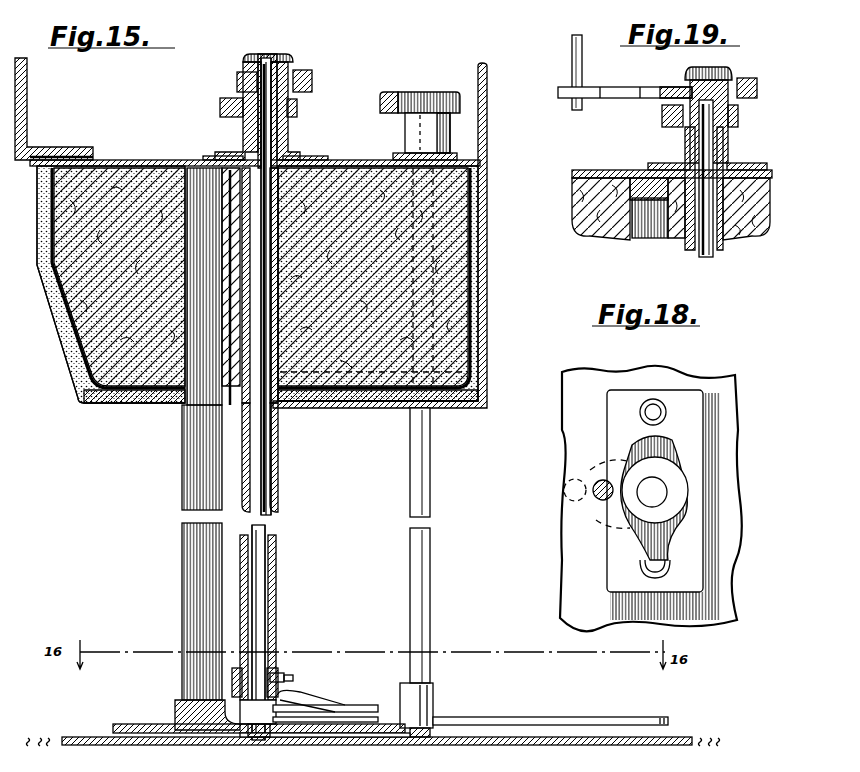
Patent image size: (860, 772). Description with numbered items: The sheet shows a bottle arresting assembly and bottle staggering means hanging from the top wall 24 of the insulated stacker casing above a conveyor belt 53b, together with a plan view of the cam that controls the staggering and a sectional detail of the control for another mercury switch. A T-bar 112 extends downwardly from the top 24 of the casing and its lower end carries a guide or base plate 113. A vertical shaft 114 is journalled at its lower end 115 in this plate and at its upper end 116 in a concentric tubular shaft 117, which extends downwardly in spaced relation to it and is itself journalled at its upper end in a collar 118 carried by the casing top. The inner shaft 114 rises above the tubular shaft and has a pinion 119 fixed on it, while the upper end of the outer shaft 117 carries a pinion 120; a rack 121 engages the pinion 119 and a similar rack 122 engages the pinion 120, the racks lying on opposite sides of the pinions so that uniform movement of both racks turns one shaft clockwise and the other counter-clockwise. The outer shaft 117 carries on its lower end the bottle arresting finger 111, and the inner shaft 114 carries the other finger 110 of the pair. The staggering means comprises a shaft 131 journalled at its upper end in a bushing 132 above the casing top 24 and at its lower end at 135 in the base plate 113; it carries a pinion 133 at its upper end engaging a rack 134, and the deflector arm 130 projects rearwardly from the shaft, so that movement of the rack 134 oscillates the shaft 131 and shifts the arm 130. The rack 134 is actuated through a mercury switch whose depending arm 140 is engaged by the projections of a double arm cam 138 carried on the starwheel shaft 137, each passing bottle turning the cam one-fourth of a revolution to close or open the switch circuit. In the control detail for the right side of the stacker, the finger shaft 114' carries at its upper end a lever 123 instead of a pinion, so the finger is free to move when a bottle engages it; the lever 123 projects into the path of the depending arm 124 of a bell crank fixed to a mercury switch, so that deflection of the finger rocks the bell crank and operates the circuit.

In FIG. 15, the top wall 24 is at (118, 188).
In FIG. 19, the top wall 24 is at (590, 170).
In FIG. 18, the top wall 24 is at (588, 382).
In FIG. 15, the conveyor belt 53b is at (505, 748).
In FIG. 15, the bottle arresting finger 110 is at (358, 740).
In FIG. 15, the bottle arresting finger 111 is at (360, 706).
In FIG. 15, the T-bar 112 is at (190, 487).
In FIG. 19, the T-bar 112 is at (643, 222).
In FIG. 15, the guide or base plate 113 is at (318, 728).
In FIG. 15, the vertical shaft 114 is at (306, 399).
In FIG. 19, the shaft 114' is at (674, 184).
In FIG. 15, the lower end of the vertical shaft 115 is at (250, 738).
In FIG. 15, the upper end of the vertical shaft 116 is at (292, 70).
In FIG. 15, the tubular shaft 117 is at (285, 150).
In FIG. 19, the tubular shaft 117 is at (720, 253).
In FIG. 15, the collar 118 is at (244, 142).
In FIG. 15, the pinion 119 is at (240, 76).
In FIG. 15, the pinion 120 is at (296, 104).
In FIG. 19, the pinion 120 is at (738, 123).
In FIG. 15, the rack 121 is at (313, 74).
In FIG. 19, the rack 121 is at (748, 79).
In FIG. 15, the rack 122 is at (222, 101).
In FIG. 19, the lever 123 is at (668, 88).
In FIG. 19, the depending arm of bell crank lever 124 is at (574, 62).
In FIG. 15, the deflector arm 130 is at (528, 717).
In FIG. 15, the shaft 131 is at (422, 571).
In FIG. 15, the bushing 132 is at (402, 143).
In FIG. 15, the pinion 133 is at (452, 92).
In FIG. 15, the rack 134 is at (392, 92).
In FIG. 15, the lower journal of shaft 135 is at (418, 737).
In FIG. 18, the starwheel shaft 137 is at (660, 488).
In FIG. 18, the double arm cam 138 is at (640, 534).
In FIG. 18, the depending arm 140 is at (596, 480).